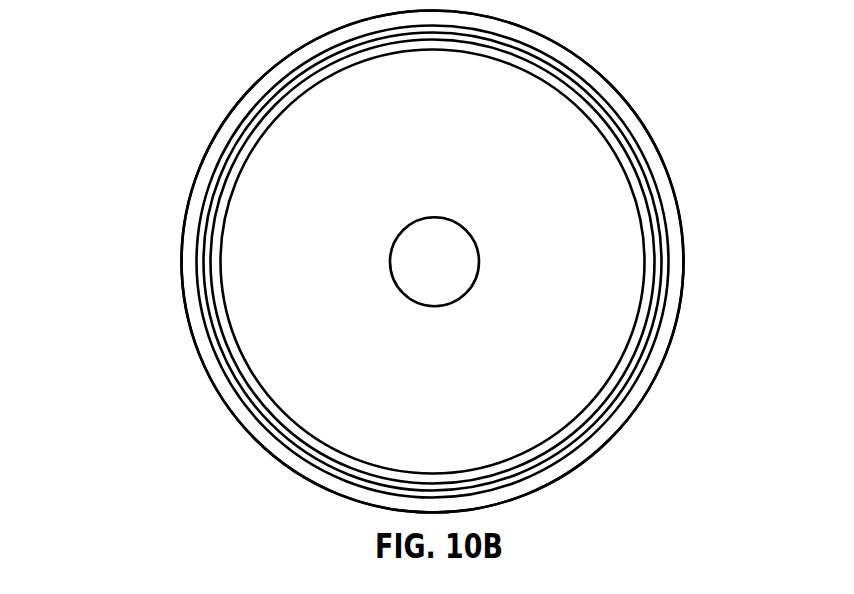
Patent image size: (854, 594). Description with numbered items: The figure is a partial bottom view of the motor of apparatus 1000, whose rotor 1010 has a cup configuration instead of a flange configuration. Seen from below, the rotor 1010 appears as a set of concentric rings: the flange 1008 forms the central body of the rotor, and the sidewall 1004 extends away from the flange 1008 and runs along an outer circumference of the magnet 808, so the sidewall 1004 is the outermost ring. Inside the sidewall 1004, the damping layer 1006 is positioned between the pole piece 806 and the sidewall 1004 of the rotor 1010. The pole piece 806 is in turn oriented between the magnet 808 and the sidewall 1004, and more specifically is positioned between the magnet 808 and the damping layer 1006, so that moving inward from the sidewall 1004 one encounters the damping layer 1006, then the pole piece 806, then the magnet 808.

The apparatus 1000 is at (76, 59).
The sidewall 1004 is at (586, 44).
The rotor 1010 is at (615, 95).
The damping layer 1006 is at (642, 153).
The pole piece 806 is at (650, 191).
The magnet 808 is at (650, 238).
The flange 1008 is at (459, 164).